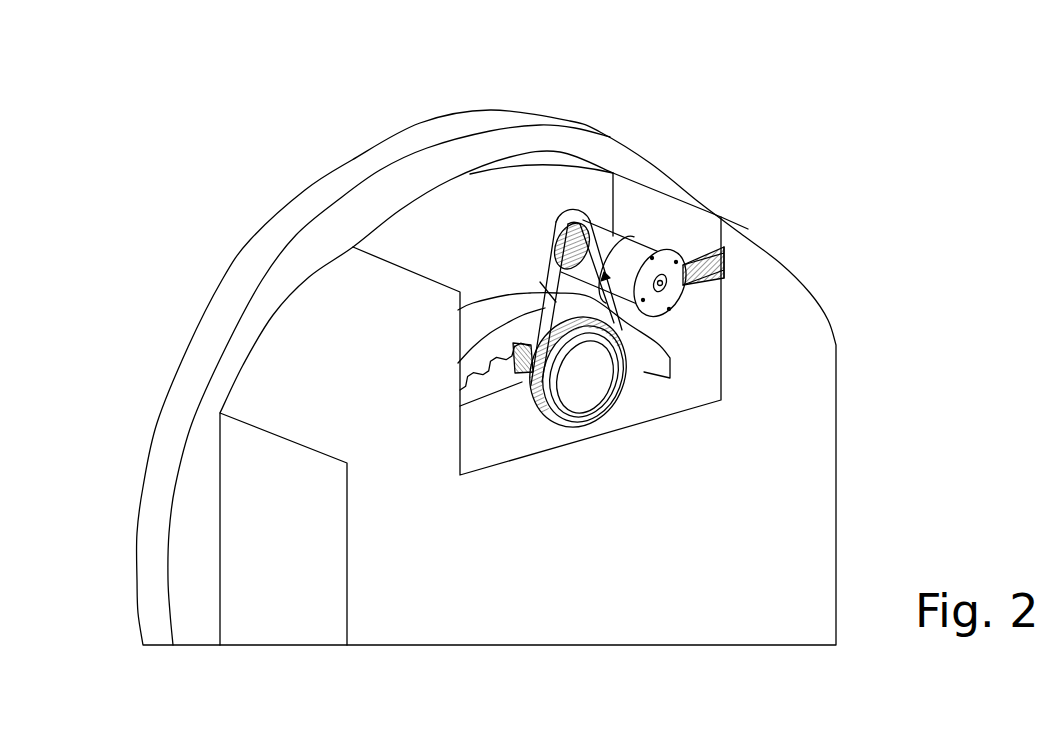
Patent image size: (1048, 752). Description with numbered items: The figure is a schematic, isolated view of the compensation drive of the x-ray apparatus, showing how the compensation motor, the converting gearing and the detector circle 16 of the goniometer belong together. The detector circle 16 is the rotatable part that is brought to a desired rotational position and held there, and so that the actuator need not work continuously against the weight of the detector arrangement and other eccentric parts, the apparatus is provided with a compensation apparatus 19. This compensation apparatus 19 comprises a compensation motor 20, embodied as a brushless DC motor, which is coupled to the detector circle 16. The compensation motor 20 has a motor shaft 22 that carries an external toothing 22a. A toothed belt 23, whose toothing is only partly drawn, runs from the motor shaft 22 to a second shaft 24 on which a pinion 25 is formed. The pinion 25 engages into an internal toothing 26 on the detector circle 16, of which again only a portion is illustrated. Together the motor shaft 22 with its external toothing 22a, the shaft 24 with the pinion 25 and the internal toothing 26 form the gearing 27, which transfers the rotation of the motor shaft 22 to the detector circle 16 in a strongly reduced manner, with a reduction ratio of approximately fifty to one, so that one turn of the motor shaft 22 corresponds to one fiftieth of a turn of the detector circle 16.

The detector circle 16 is at (490, 325).
The compensation apparatus 19 is at (723, 206).
The compensation motor 20 is at (638, 255).
The motor shaft 22 is at (491, 158).
The external toothing 22a is at (562, 228).
The toothed belt 23 is at (548, 305).
The shaft 24 is at (585, 378).
The pinion 25 is at (520, 360).
The internal toothing 26 is at (455, 350).
The gearing 27 is at (547, 270).